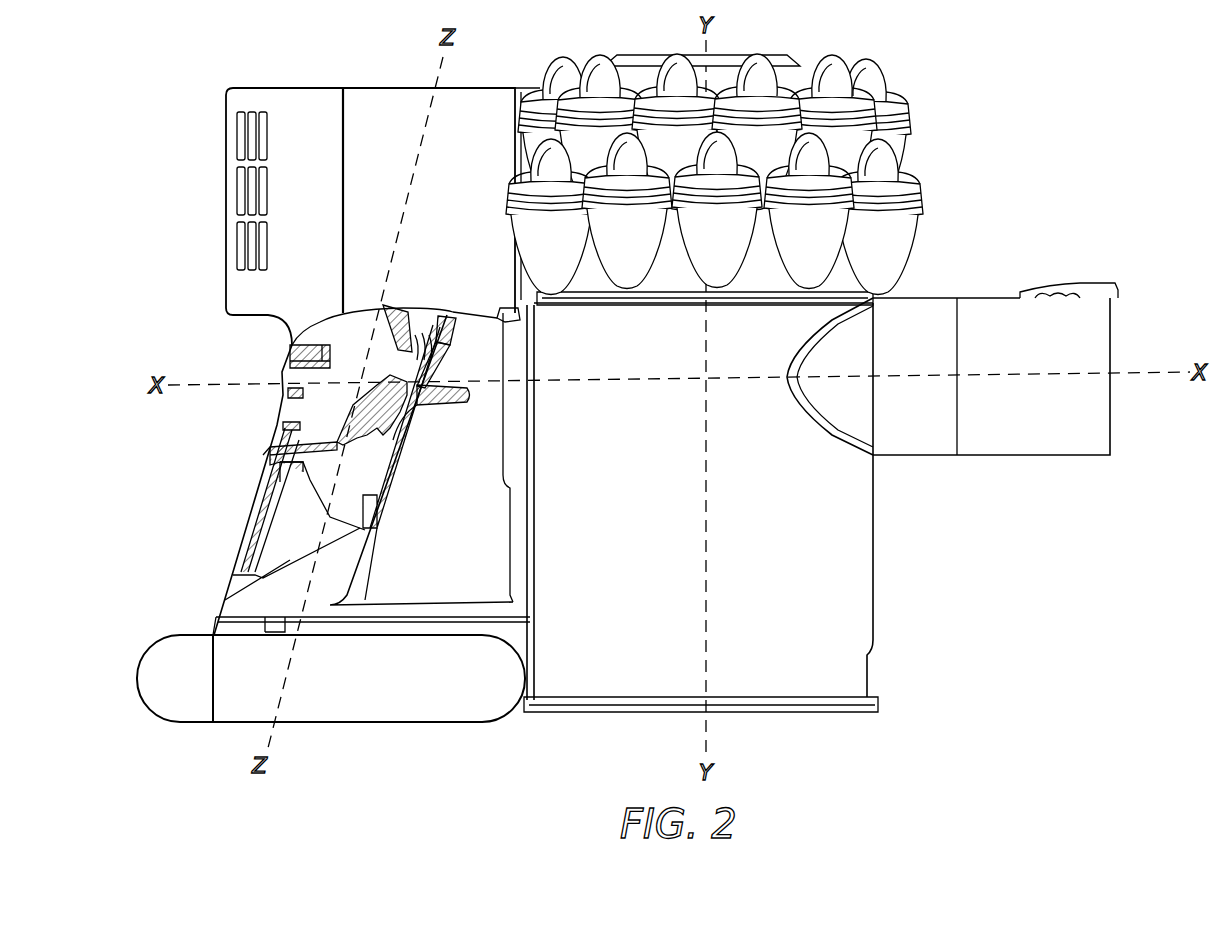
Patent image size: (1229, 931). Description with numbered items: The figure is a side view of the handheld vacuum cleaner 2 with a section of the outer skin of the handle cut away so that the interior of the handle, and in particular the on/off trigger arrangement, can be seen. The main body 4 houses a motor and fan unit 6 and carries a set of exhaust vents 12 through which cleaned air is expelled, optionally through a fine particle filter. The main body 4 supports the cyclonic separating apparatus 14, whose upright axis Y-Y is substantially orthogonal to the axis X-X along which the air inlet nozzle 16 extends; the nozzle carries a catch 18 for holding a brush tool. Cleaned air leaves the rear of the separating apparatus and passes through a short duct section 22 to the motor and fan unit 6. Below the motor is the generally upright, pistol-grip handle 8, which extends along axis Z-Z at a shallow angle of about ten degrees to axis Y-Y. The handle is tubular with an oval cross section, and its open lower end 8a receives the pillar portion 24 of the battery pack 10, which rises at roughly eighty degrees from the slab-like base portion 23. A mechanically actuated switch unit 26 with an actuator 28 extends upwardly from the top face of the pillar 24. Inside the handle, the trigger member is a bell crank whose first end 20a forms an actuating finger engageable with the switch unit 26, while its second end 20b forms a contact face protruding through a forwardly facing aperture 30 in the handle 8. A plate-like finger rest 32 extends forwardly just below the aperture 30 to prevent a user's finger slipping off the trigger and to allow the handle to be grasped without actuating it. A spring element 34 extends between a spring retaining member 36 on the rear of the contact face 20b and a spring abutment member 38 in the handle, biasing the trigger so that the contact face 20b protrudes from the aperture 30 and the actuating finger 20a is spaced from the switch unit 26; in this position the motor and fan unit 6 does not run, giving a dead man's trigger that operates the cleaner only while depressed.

The handheld vacuum cleaner 2 is at (1000, 104).
The main body 4 is at (332, 60).
The motor and fan unit 6 is at (478, 92).
The handle 8 is at (232, 582).
The lower end of the handle 8a is at (232, 614).
The battery pack 10 is at (213, 727).
The exhaust vents 12 is at (236, 194).
The cyclonic separating apparatus 14 is at (853, 97).
The air inlet nozzle 16 is at (1020, 450).
The catch 18 is at (1097, 284).
The first end of the trigger member 20a is at (318, 440).
The second end of the trigger member 20b is at (470, 320).
The duct section 22 is at (538, 94).
The base portion 23 is at (400, 712).
The pillar portion 24 is at (340, 522).
The switch unit 26 is at (252, 482).
The actuator 28 is at (270, 452).
The aperture 30 is at (452, 388).
The finger rest 32 is at (456, 411).
The spring element 34 is at (409, 313).
The spring retaining member 36 is at (447, 317).
The spring abutment member 38 is at (388, 304).